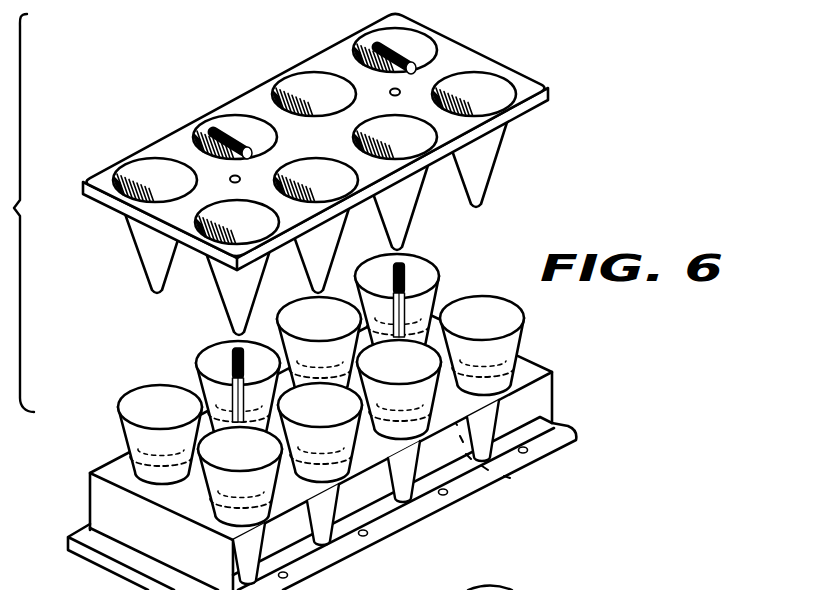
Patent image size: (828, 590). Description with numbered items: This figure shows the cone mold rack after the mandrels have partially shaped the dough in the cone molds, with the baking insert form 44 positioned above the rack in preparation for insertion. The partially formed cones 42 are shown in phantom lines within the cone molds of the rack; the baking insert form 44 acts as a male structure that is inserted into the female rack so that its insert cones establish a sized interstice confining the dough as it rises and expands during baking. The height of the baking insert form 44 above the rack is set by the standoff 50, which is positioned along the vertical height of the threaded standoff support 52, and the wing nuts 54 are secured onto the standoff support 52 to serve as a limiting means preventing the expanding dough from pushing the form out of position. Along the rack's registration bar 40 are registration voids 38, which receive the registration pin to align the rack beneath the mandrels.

The registration voids 38 is at (292, 579).
The registration bar 40 is at (410, 511).
The partially formed cones 42 is at (126, 447).
The baking insert form 44 is at (527, 82).
The standoff 50 is at (222, 390).
The standoff support 52 is at (236, 350).
The wing nuts 54 is at (375, 0).